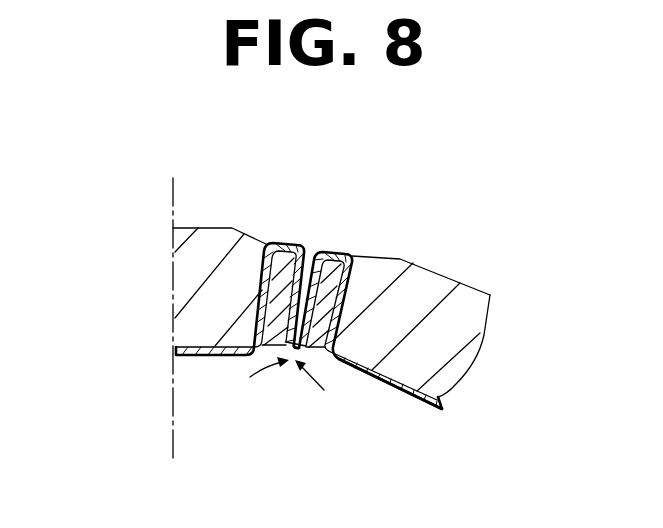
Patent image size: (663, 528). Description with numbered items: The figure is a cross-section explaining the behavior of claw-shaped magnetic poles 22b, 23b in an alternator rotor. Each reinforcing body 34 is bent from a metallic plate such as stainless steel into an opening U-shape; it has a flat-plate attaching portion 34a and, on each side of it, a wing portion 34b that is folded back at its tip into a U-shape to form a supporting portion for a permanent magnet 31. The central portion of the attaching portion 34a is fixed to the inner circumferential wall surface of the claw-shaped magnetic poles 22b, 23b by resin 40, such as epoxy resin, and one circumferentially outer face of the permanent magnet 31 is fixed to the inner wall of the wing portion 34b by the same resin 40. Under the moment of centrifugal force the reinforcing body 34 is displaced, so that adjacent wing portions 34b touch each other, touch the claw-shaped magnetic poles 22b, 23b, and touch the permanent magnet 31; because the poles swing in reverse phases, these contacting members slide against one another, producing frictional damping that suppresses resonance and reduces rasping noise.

The claw-shaped magnetic pole 22b is at (473, 299).
The claw-shaped magnetic pole 23b is at (188, 267).
The permanent magnet 31 is at (283, 251).
The reinforcing body 34 is at (433, 410).
The attaching portion 34a is at (360, 380).
The wing portion 34b is at (336, 253).
The resin 40 is at (174, 341).